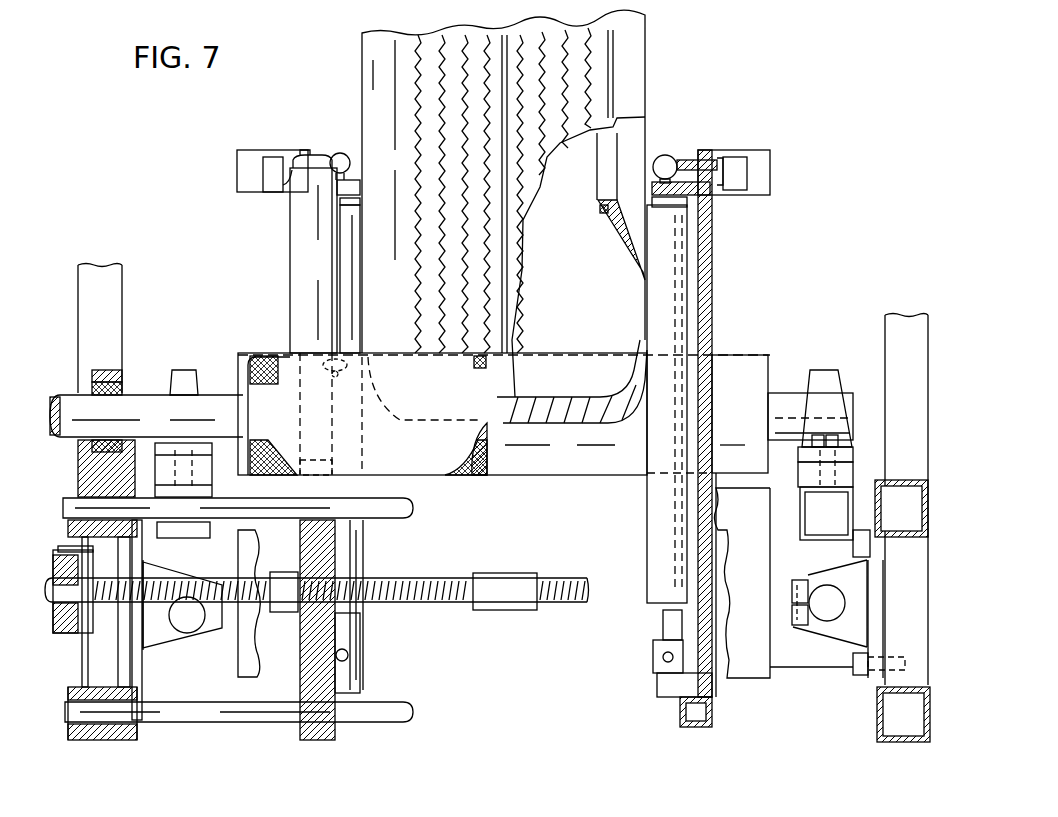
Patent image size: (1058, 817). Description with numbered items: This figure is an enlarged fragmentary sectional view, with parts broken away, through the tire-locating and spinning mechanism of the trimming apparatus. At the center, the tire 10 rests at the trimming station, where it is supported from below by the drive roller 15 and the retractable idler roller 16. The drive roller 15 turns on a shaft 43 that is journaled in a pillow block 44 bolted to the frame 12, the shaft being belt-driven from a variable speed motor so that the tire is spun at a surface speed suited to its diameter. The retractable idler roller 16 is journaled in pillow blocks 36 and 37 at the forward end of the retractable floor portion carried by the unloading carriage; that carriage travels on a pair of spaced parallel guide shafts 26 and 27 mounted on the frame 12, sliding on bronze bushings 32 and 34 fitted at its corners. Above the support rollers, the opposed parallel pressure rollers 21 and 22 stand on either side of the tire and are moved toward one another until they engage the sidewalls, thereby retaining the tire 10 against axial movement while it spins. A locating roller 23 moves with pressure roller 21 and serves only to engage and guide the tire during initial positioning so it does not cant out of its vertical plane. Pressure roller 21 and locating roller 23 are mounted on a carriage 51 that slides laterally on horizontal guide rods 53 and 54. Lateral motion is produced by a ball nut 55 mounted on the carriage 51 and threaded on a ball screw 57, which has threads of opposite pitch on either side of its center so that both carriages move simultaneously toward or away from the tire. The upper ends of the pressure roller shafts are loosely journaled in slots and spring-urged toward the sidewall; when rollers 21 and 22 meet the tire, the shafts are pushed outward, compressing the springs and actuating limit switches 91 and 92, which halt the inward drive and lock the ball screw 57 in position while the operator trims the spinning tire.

The tire 10 is at (375, 72).
The frame 12 is at (120, 290).
The drive roller 15 is at (276, 355).
The retractable idler roller 16 is at (757, 360).
The pressure roller 21 is at (358, 232).
The pressure roller 22 is at (652, 268).
The locating roller 23 is at (300, 262).
The guide shaft 26 is at (137, 630).
The guide shaft 27 is at (827, 618).
The bronze bushing 32 is at (235, 660).
The bronze bushing 34 is at (787, 660).
The pillow block 36 is at (183, 372).
The pillow block 37 is at (823, 370).
The shaft 43 is at (217, 405).
The pillow block 44 is at (105, 372).
The carriage 51 is at (340, 555).
The horizontal guide rod 53 is at (410, 515).
The horizontal guide rod 54 is at (395, 725).
The ball nut 55 is at (285, 612).
The ball screw 57 is at (430, 605).
The limit switch 91 is at (272, 165).
The limit switch 92 is at (735, 175).